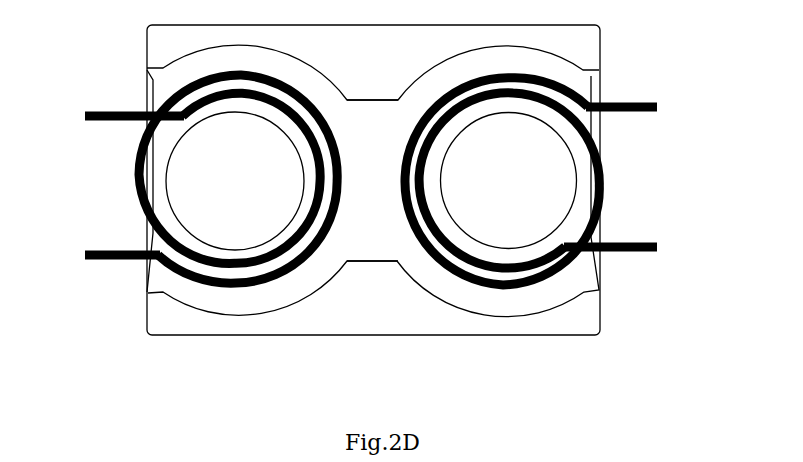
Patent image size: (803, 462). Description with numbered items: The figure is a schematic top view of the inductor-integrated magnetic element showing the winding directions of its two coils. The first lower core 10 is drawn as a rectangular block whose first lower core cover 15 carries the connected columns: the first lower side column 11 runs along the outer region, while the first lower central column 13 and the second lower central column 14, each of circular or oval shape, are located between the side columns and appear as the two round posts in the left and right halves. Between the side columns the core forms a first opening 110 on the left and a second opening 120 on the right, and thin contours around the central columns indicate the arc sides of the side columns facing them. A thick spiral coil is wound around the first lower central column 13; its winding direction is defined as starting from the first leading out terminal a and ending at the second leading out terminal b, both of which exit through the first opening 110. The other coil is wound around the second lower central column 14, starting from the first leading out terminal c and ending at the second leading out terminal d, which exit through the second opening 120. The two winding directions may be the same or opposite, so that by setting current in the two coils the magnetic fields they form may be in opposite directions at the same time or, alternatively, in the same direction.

The first lower core 10 is at (193, 356).
The first lower side column 11 is at (343, 312).
The first lower central column 13 is at (246, 195).
The second lower central column 14 is at (521, 195).
The first lower core cover 15 is at (389, 253).
The first opening 110 is at (182, 176).
The second opening 120 is at (562, 176).
The first leading out terminal a is at (125, 116).
The second leading out terminal b is at (113, 256).
The first leading out terminal c is at (621, 248).
The second leading out terminal d is at (632, 111).